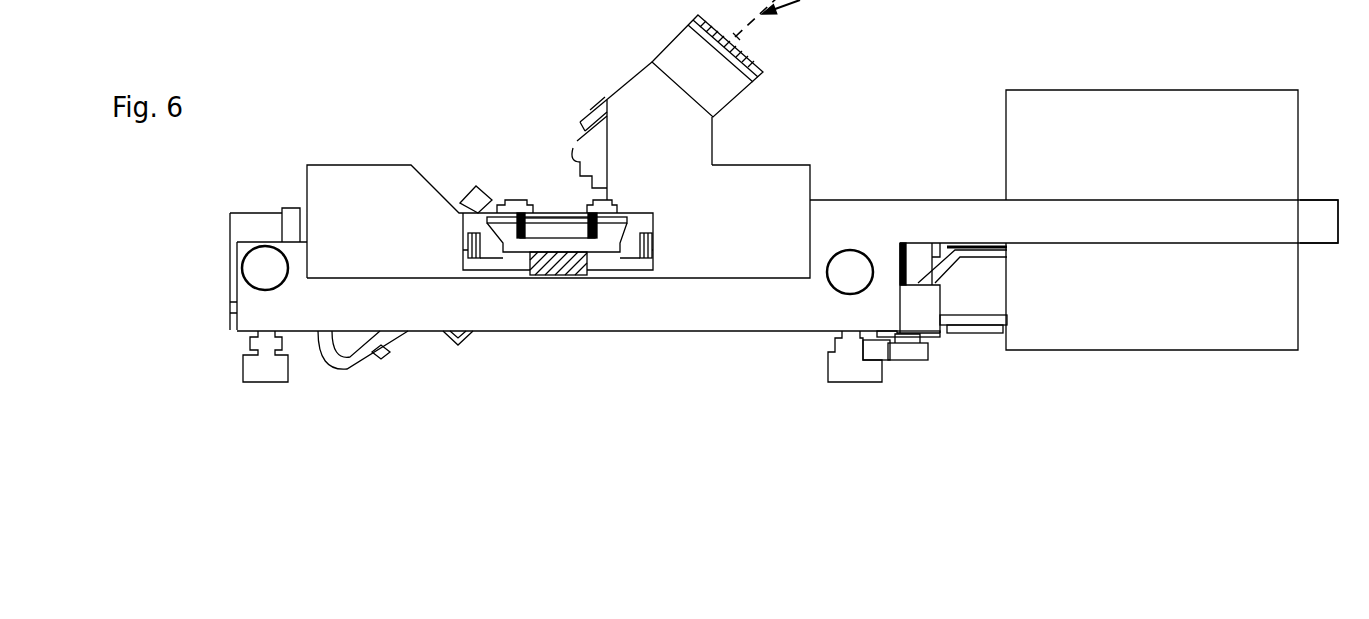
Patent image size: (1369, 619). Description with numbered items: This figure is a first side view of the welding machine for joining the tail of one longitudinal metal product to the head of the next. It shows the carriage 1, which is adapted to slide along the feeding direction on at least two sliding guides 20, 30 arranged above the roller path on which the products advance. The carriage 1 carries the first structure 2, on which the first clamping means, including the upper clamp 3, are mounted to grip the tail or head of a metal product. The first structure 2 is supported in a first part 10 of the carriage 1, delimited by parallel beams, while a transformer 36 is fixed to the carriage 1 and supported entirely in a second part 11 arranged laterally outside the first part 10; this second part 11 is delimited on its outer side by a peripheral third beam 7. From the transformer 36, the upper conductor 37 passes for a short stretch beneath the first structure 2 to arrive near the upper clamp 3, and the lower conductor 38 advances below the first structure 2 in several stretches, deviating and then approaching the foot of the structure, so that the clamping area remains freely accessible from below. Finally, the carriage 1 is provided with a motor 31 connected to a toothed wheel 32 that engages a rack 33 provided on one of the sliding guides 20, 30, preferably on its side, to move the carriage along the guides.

The carriage 1 is at (841, 168).
The first structure 2 is at (747, 52).
The upper clamp of first clamping means 3 is at (582, 158).
The third beam 7 is at (1322, 198).
The first part of the carriage 10 is at (601, 336).
The second part of the carriage 11 is at (961, 185).
The sliding guide 20 is at (257, 368).
The sliding guide 30 is at (840, 363).
The motor 31 is at (915, 305).
The toothed wheel 32 is at (908, 350).
The rack 33 is at (878, 352).
The transformer 36 is at (1268, 130).
The upper conductor 37 is at (990, 252).
The lower conductor 38 is at (472, 197).